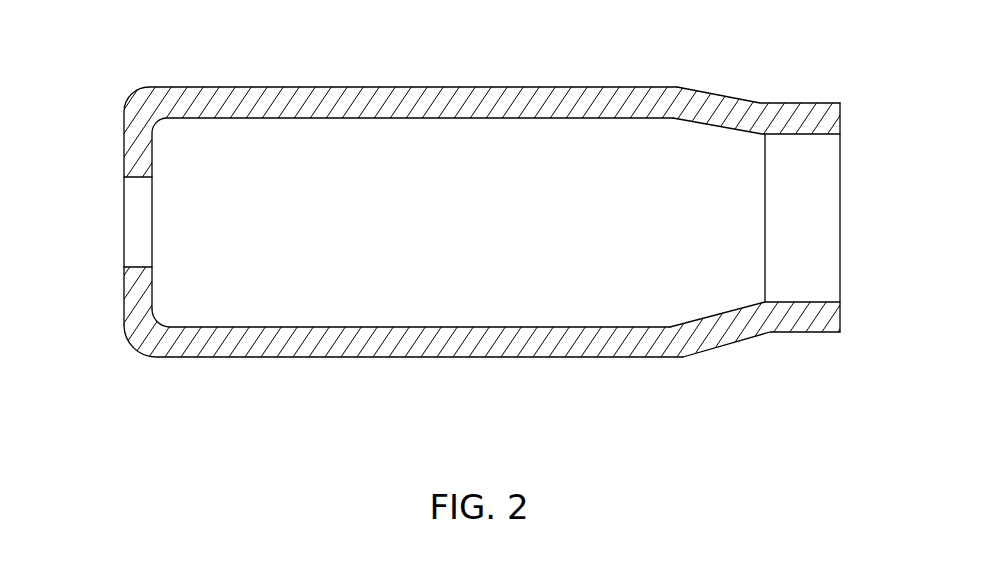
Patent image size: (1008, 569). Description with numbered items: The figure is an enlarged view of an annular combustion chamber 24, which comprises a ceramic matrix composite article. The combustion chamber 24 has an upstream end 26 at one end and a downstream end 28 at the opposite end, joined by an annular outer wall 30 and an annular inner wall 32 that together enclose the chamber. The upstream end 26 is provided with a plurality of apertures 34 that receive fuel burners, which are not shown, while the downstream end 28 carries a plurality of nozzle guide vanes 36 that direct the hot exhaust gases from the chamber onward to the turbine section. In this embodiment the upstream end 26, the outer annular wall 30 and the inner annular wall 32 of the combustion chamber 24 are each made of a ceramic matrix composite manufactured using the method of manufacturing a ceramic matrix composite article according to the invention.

The annular combustion chamber 24 is at (530, 75).
The upstream end 26 is at (122, 293).
The downstream end 28 is at (803, 102).
The annular outer wall 30 is at (327, 86).
The annular inner wall 32 is at (402, 358).
The apertures 34 is at (136, 207).
The nozzle guide vanes 36 is at (840, 205).